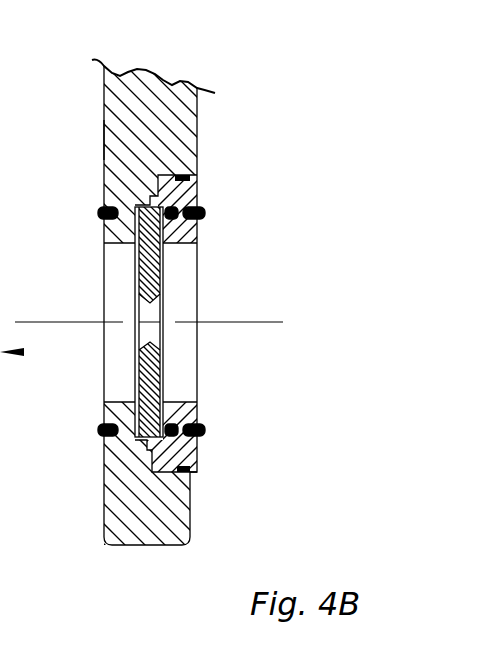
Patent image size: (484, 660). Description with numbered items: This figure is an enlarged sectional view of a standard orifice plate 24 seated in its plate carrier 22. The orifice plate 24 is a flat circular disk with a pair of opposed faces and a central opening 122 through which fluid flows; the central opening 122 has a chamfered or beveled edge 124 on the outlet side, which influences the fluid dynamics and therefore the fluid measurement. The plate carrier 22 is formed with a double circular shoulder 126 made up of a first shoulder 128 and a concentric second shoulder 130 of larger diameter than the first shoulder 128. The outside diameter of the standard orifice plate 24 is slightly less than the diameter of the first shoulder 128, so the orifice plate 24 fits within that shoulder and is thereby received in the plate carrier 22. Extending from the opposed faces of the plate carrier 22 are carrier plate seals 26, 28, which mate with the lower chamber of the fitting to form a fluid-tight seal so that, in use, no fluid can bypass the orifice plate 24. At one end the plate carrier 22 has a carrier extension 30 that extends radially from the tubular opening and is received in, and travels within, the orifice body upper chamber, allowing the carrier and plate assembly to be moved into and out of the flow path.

The plate carrier 22 is at (127, 545).
The orifice plate 24 is at (163, 377).
The carrier plate seal 26 is at (200, 220).
The carrier plate seal 28 is at (102, 207).
The carrier extension 30 is at (158, 70).
The central opening 122 is at (150, 298).
The chamfered or beveled edge 124 is at (160, 298).
The double circular shoulder 126 is at (105, 137).
The first shoulder 128 is at (142, 447).
The second shoulder 130 is at (153, 196).